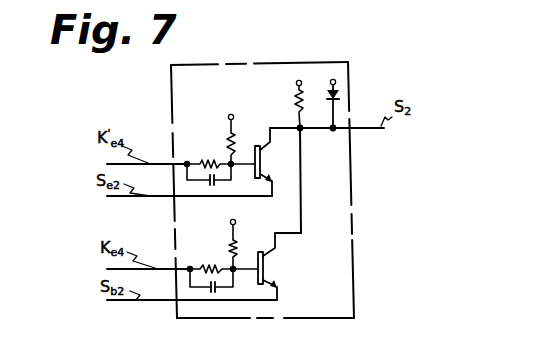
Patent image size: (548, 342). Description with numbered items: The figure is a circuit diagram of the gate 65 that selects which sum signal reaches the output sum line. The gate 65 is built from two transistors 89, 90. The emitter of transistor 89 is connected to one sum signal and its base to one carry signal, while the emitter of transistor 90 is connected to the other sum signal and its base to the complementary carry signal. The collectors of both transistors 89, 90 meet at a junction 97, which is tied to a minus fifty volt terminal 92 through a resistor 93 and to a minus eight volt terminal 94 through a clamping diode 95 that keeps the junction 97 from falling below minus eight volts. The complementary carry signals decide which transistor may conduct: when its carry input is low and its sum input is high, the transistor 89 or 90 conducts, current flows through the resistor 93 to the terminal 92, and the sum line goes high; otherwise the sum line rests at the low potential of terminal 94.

The gate 65 is at (284, 62).
The transistor 89 is at (254, 148).
The transistor 90 is at (258, 258).
The −50 volt terminal 92 is at (296, 84).
The resistor 93 is at (297, 102).
The −8 volt terminal 94 is at (340, 84).
The clamping diode 95 is at (341, 99).
The junction 97 is at (302, 132).